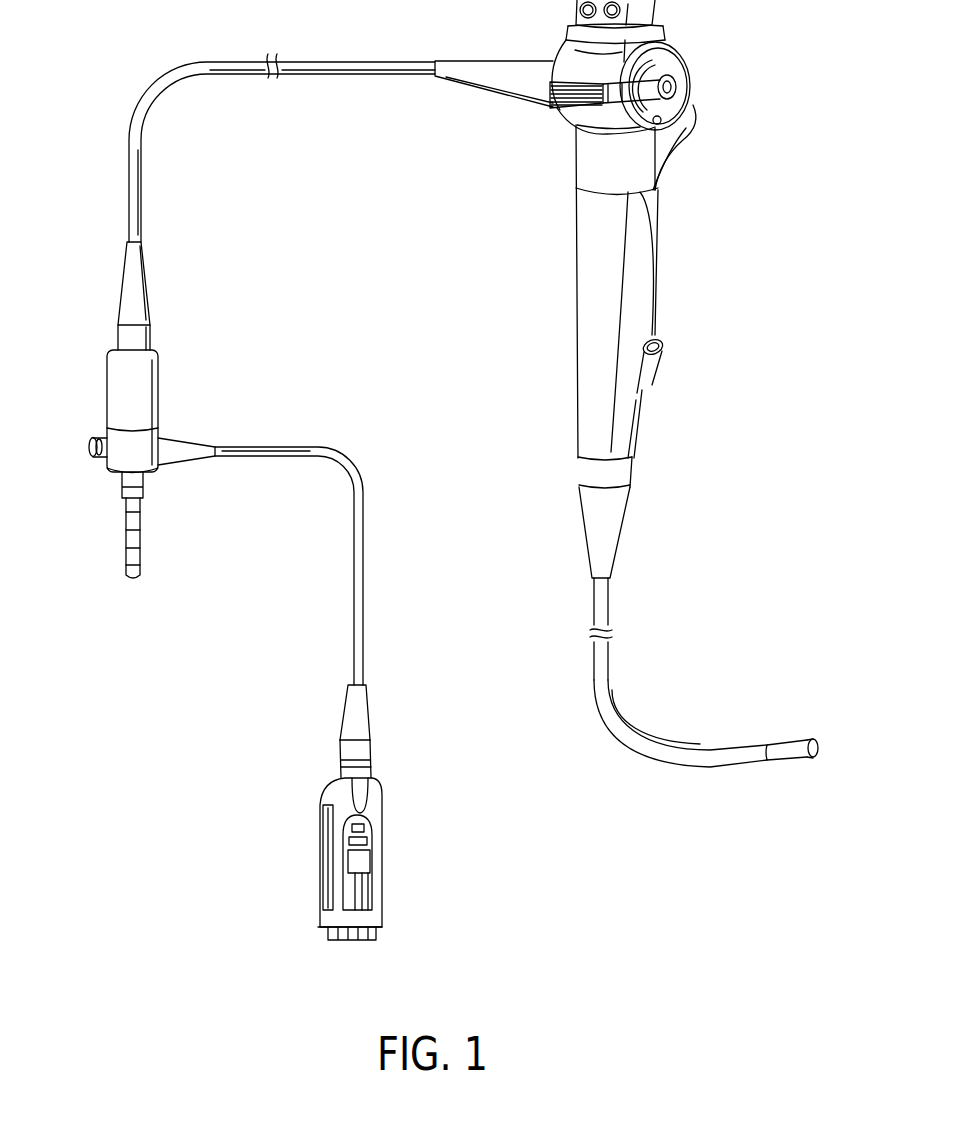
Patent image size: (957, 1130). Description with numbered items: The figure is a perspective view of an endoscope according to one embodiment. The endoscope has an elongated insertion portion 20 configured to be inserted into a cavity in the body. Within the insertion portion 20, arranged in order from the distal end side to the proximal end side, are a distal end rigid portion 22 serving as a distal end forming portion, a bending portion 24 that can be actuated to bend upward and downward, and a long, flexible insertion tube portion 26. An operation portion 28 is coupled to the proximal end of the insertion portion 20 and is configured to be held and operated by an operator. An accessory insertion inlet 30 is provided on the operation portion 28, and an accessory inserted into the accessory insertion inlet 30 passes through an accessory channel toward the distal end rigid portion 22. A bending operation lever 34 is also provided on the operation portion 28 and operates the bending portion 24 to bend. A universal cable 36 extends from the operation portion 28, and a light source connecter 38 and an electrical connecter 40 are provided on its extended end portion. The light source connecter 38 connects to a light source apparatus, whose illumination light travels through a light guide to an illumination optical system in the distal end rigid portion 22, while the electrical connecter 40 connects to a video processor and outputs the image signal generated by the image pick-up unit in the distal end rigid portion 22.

The insertion portion 20 is at (722, 705).
The distal end rigid portion 22 is at (816, 760).
The bending portion 24 is at (782, 762).
The insertion tube portion 26 is at (668, 767).
The operation portion 28 is at (644, 289).
The accessory insertion inlet 30 is at (668, 345).
The bending operation lever 34 is at (560, 116).
The universal cable 36 is at (355, 68).
The light source connecter 38 is at (112, 462).
The electrical connecter 40 is at (372, 802).